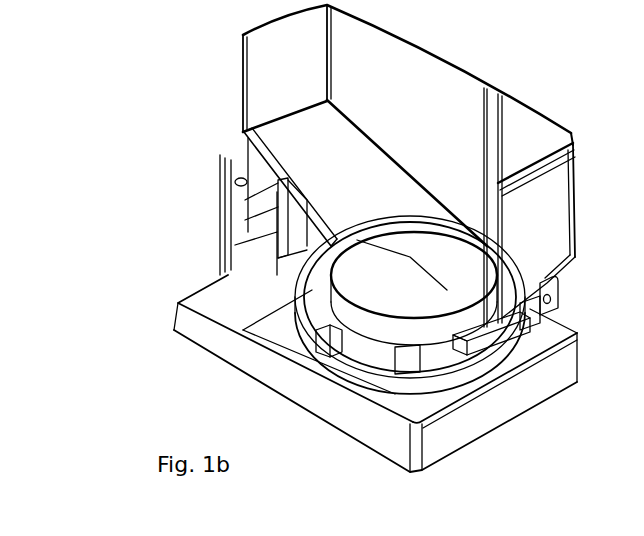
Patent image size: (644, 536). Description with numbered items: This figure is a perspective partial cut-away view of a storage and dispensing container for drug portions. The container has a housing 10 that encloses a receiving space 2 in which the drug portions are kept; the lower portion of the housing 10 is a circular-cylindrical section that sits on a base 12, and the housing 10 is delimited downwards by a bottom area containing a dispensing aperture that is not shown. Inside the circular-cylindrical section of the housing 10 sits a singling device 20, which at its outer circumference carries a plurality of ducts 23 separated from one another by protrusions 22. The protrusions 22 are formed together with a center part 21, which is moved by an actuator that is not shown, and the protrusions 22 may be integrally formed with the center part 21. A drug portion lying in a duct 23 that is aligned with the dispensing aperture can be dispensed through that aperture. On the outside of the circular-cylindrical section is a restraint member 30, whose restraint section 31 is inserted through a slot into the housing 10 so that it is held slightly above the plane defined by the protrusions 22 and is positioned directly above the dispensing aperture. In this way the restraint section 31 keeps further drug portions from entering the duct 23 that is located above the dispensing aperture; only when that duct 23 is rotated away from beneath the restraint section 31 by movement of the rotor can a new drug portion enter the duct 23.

The receiving space 2 is at (320, 133).
The singling device 20 is at (445, 200).
The housing 10 is at (556, 191).
The restraint member 30 is at (572, 288).
The center part 21 is at (430, 245).
The protrusions 22 is at (313, 330).
The ducts 23 is at (337, 348).
The restraint section 31 is at (492, 340).
The base 12 is at (553, 380).